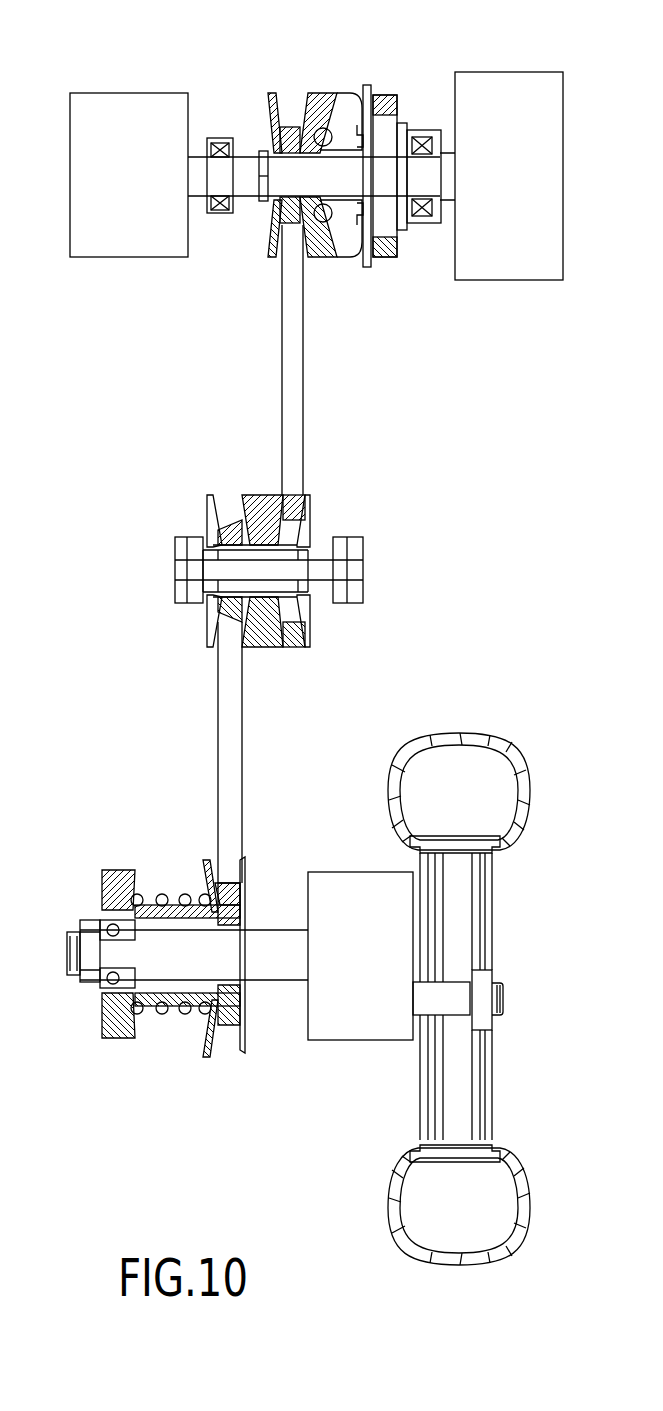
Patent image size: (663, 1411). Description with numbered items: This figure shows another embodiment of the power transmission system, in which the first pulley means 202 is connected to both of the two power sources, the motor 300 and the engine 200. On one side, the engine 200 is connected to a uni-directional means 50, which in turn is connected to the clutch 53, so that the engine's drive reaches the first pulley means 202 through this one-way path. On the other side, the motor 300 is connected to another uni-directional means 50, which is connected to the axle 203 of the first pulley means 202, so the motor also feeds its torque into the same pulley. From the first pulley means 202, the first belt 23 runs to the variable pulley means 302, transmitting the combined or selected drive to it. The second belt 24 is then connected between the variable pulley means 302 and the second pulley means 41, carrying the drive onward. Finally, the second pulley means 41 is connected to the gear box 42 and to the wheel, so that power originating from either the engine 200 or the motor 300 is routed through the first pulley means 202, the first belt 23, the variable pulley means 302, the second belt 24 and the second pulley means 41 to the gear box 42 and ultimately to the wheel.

The motor 300 is at (92, 103).
The uni-directional means 50 is at (216, 126).
The first pulley means 202 is at (294, 102).
The axle of first pulley means 203 is at (318, 182).
The clutch 53 is at (383, 95).
The engine 200 is at (530, 88).
The first belt 23 is at (297, 418).
The variable pulley means 302 is at (195, 524).
The second belt 24 is at (232, 800).
The second pulley means 41 is at (207, 1050).
The gear box 42 is at (360, 1030).